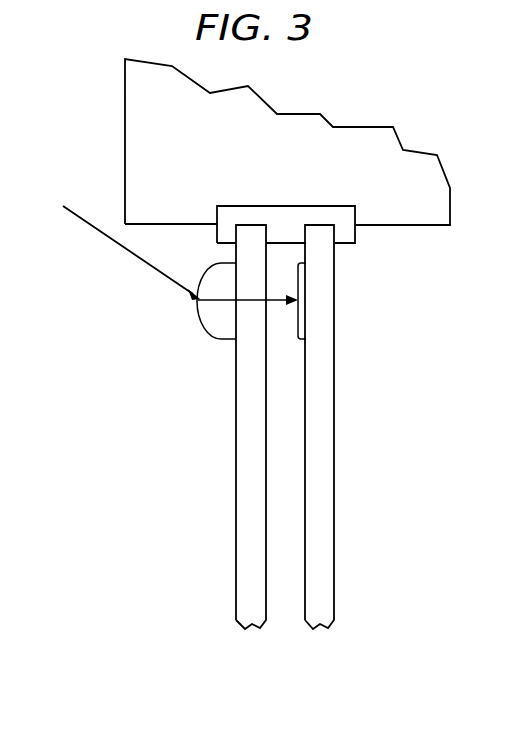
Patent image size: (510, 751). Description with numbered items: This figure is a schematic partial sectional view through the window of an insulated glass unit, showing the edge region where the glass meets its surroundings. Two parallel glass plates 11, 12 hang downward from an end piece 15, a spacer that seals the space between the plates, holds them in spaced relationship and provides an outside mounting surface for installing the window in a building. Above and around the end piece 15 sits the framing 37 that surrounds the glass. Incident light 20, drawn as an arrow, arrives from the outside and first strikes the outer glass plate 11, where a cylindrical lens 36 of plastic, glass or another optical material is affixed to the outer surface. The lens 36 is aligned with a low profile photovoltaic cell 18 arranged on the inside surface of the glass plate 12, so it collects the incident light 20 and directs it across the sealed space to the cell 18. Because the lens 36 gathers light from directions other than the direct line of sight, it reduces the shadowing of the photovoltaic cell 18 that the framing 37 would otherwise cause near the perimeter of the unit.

The framing 37 is at (353, 135).
The end piece 15 is at (345, 238).
The glass plate 11 is at (247, 452).
The glass plate 12 is at (322, 396).
The cylindrical lens 36 is at (203, 325).
The photovoltaic cell 18 is at (305, 318).
The incident light 20 is at (108, 238).